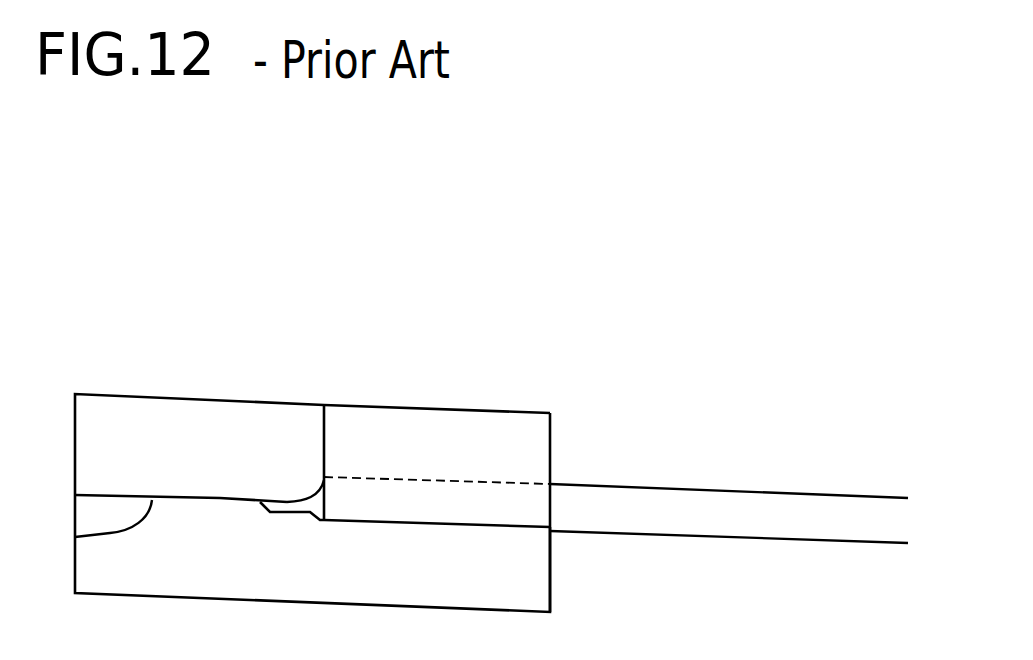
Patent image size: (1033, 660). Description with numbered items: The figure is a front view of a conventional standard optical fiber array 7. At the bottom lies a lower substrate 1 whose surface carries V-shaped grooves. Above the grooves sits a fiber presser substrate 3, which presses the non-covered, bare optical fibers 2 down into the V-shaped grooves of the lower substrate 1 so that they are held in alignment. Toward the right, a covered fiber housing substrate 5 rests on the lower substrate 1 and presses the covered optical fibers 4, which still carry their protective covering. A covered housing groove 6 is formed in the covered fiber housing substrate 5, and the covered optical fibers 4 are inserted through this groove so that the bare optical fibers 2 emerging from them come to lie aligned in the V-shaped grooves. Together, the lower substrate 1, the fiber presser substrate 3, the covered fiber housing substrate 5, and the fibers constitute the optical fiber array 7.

The lower substrate 1 is at (103, 577).
The bare optical fibers 2 is at (75, 537).
The fiber presser substrate 3 is at (108, 448).
The covered optical fibers 4 is at (718, 518).
The covered fiber housing substrate 5 is at (392, 433).
The covered housing groove 6 is at (475, 503).
The optical fiber array 7 is at (582, 419).